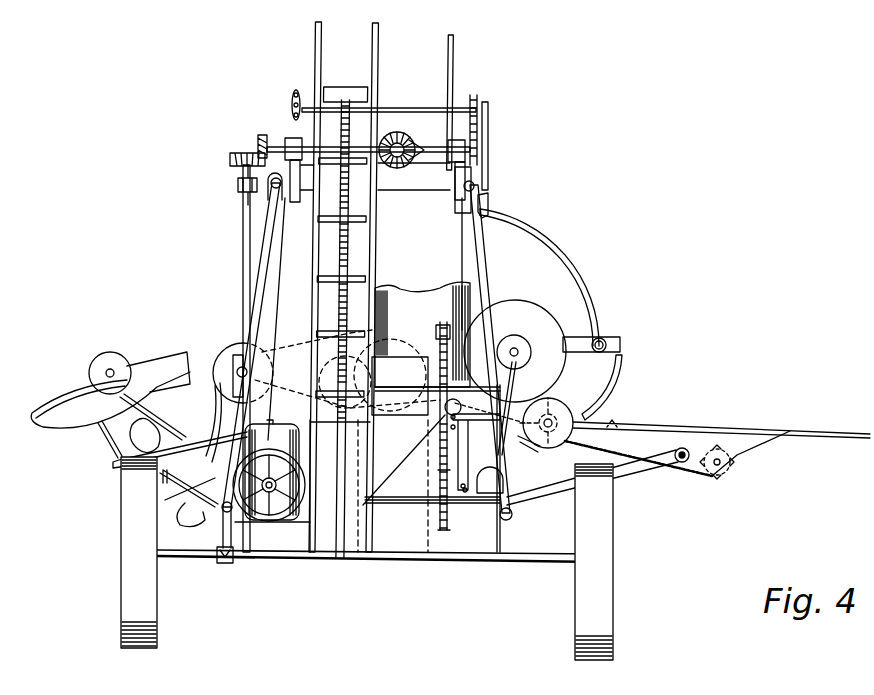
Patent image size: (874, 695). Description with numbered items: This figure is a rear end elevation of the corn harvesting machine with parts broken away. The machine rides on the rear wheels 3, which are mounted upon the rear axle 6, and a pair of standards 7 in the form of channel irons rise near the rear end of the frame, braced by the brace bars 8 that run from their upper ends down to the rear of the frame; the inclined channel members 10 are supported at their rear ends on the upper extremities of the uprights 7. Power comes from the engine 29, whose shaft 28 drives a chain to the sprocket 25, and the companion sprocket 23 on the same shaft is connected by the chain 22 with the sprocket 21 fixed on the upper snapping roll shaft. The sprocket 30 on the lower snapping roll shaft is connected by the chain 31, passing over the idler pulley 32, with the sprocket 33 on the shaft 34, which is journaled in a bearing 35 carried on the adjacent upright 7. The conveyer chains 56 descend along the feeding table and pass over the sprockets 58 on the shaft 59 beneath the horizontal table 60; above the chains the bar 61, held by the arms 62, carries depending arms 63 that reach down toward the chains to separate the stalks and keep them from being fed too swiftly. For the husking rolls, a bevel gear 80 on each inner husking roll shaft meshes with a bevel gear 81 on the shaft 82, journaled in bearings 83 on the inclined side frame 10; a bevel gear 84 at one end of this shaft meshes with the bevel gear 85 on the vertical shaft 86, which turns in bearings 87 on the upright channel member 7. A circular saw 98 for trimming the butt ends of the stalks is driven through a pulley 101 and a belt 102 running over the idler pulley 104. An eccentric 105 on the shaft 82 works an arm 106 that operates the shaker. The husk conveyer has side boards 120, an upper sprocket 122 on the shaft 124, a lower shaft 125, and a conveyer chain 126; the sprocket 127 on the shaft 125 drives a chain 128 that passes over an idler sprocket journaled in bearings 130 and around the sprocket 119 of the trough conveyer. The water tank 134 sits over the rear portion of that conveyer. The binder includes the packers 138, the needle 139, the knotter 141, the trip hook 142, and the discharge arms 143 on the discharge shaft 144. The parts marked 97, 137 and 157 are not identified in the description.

The rear wheels 3 is at (152, 601).
The rear axle 6 is at (462, 540).
The standards 7 is at (281, 262).
The brace bars 8 is at (262, 278).
The inclined channel members 10 is at (282, 200).
The sprocket 21 is at (388, 330).
The chain 22 is at (300, 344).
The sprocket 23 is at (347, 380).
The sprocket 25 is at (229, 350).
The engine shaft 28 is at (518, 350).
The engine 29 is at (283, 424).
The sprocket 30 is at (400, 386).
The chain 31 is at (372, 382).
The idler pulley 32 is at (445, 408).
The sprocket 33 is at (565, 408).
The shaft 34 is at (538, 421).
The bearing 35 is at (529, 449).
The conveyer chains 56 is at (690, 468).
The sprockets 58 is at (677, 464).
The shaft 59 is at (730, 462).
The horizontal table 60 is at (788, 432).
The bar 61 is at (575, 337).
The arms 62 is at (577, 258).
The depending arms 63 is at (616, 378).
The bevel gear 80 is at (397, 132).
The bevel gear 81 is at (418, 143).
The shaft 82 is at (275, 147).
The bearings 83 is at (293, 138).
The bevel gear 84 is at (258, 136).
The bevel gear 85 is at (236, 166).
The vertical shaft 86 is at (243, 232).
The bearings 87 is at (240, 192).
The upright post 97 is at (315, 50).
The circular saw 98 is at (515, 351).
The pulley 101 is at (528, 358).
The belt 102 is at (512, 378).
The idler pulley 104 is at (503, 482).
The eccentric 105 is at (488, 110).
The arm 106 is at (488, 203).
The sprocket 119 is at (452, 320).
The side boards 120 is at (350, 238).
The upper sprocket 122 is at (346, 87).
The shaft 124 is at (405, 108).
The shaft 125 is at (410, 503).
The conveyer chain 126 is at (354, 208).
The sprocket 127 is at (447, 522).
The chain 128 is at (440, 466).
The bearings 130 is at (440, 340).
The water tank 134 is at (402, 297).
The bracket 137 is at (113, 464).
The packers 138 is at (216, 392).
The needle 139 is at (188, 522).
The knotter 141 is at (178, 350).
The trip hook 142 is at (150, 436).
The discharge arms 143 is at (62, 400).
The discharge shaft 144 is at (112, 370).
The chain link 157 is at (296, 92).